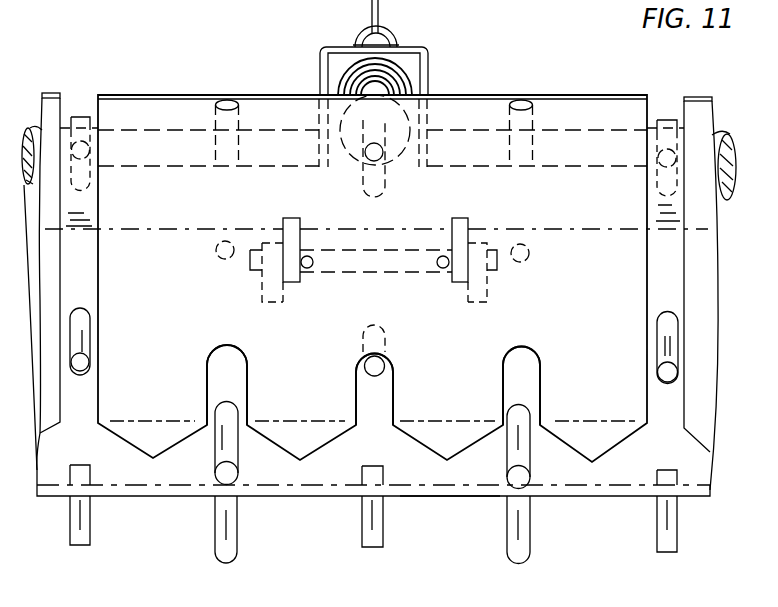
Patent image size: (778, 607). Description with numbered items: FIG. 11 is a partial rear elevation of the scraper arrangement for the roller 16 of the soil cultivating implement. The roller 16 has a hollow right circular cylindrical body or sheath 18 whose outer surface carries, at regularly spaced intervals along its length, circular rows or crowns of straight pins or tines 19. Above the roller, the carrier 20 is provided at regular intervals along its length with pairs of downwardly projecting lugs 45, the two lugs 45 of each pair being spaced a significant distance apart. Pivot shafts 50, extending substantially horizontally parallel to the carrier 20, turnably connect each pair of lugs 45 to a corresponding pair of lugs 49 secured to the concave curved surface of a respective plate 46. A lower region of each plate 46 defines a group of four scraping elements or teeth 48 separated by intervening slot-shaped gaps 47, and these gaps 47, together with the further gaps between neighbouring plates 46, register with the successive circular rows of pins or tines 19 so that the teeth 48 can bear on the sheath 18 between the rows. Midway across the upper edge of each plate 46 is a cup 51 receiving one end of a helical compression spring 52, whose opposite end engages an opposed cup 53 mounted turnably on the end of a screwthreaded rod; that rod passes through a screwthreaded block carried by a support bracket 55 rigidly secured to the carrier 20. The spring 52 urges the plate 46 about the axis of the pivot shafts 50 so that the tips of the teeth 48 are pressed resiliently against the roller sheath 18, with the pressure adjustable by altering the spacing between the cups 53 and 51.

The roller 16 is at (328, 497).
The roller body or sheath 18 is at (445, 496).
The pin or tine 19 is at (666, 124).
The carrier 20 is at (158, 222).
The lug 45 is at (298, 283).
The plate 46 is at (90, 286).
The slot-shaped gap 47 is at (244, 352).
The scraping element or tooth 48 is at (262, 380).
The lug 49 is at (268, 302).
The pivot shaft 50 is at (250, 268).
The cup 51 is at (365, 89).
The helical compression spring 52 is at (352, 74).
The cup 53 is at (410, 72).
The support bracket 55 is at (428, 50).